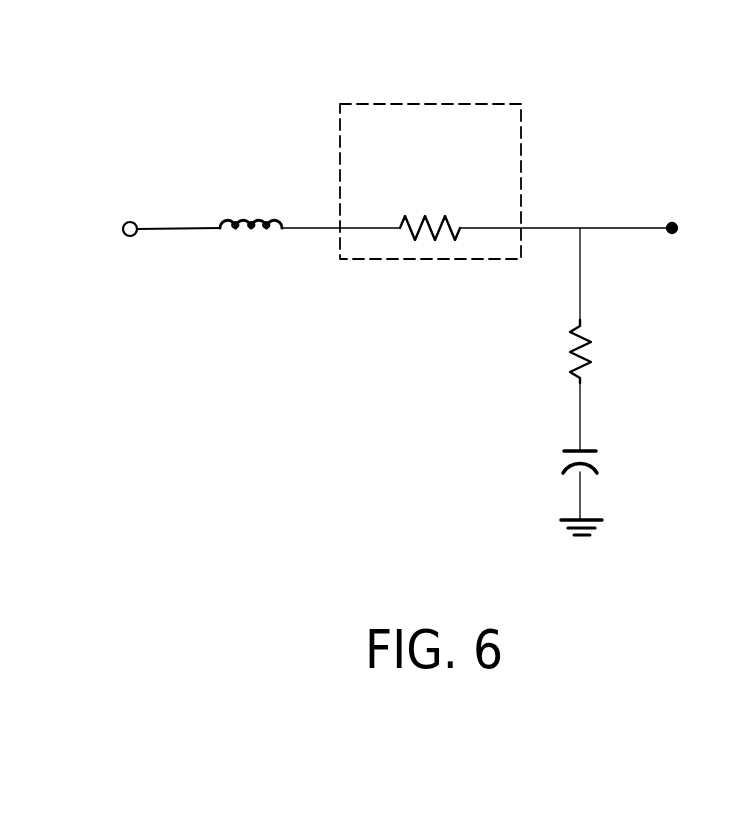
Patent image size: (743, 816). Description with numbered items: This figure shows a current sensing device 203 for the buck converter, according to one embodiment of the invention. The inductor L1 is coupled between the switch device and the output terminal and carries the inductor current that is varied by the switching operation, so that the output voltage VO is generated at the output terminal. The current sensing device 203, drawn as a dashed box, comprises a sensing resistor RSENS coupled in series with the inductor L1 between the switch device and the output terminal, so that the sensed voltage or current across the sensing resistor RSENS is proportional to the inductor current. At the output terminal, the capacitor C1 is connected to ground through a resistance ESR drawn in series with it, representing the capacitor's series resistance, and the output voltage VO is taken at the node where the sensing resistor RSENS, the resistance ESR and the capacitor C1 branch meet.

The inductor L1 is at (250, 218).
The current sensing device 203 is at (462, 103).
The sensing resistor RSENS is at (436, 215).
The output voltage VO is at (706, 228).
The equivalent series resistance ESR is at (612, 356).
The capacitor C1 is at (598, 462).